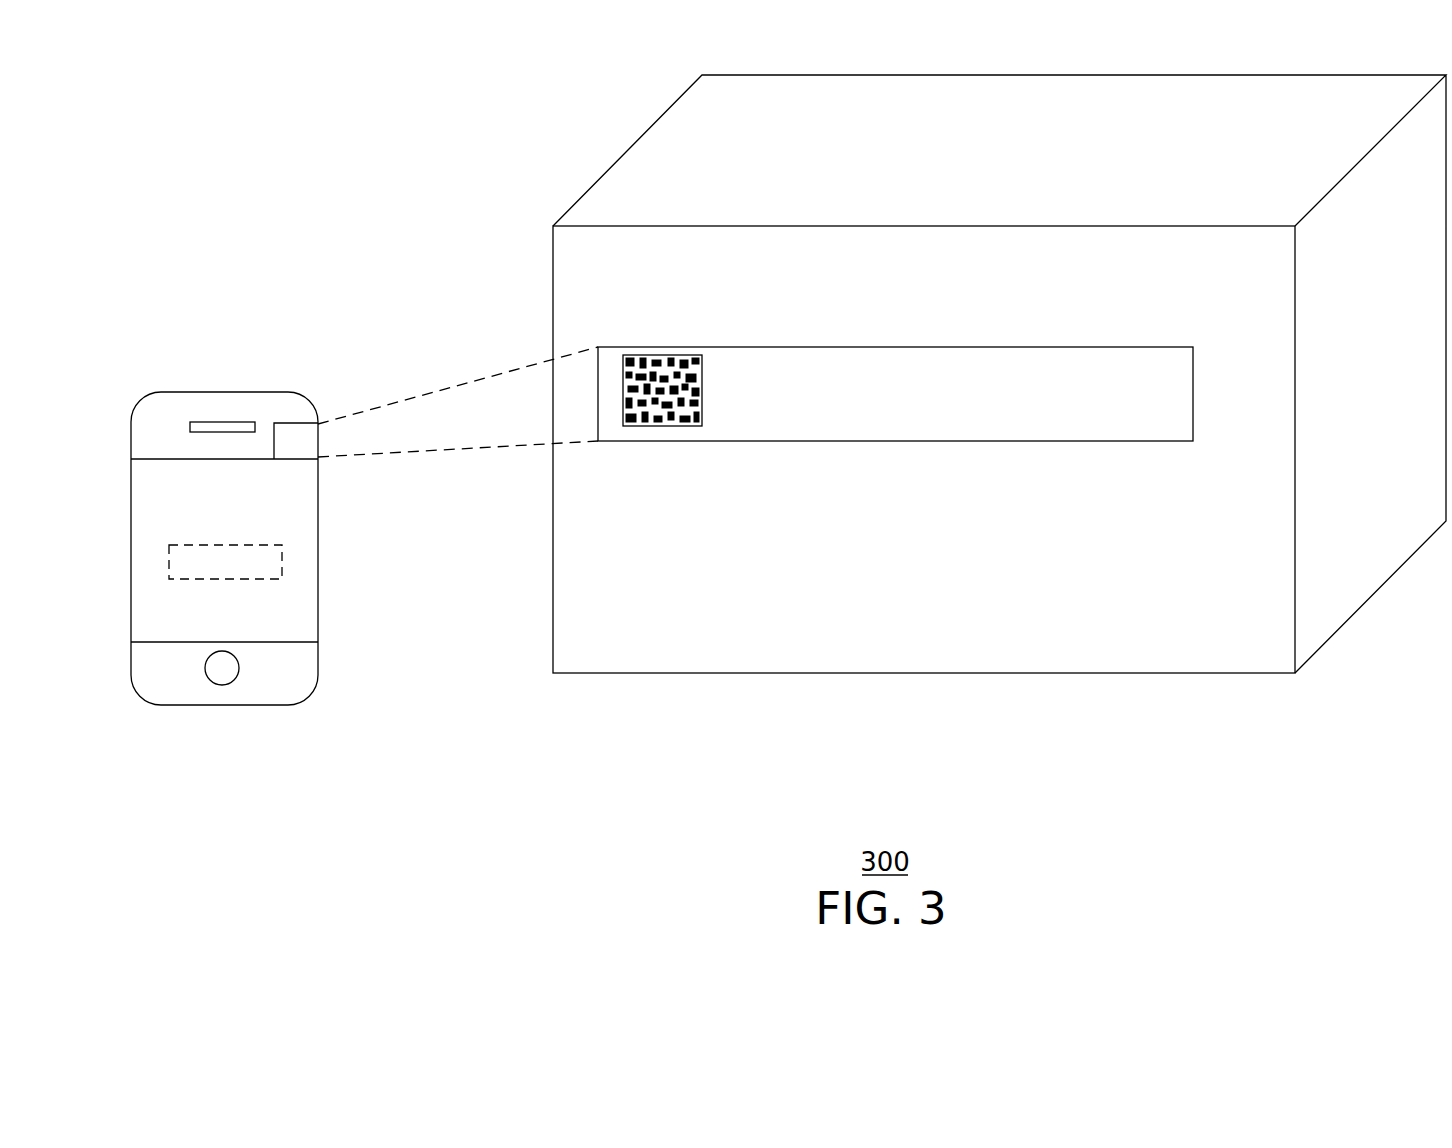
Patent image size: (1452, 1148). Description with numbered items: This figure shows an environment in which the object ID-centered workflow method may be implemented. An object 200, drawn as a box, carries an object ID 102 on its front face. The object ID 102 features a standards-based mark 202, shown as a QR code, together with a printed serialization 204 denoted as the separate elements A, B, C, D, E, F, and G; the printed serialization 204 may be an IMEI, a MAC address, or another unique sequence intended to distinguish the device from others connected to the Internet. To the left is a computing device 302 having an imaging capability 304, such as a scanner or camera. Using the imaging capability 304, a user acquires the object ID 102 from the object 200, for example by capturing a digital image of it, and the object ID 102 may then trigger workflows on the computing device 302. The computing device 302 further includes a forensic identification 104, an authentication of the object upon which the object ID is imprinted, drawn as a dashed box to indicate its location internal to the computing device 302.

The object ID 102 is at (1208, 348).
The forensic identification 104 is at (225, 562).
The object 200 is at (647, 675).
The standards-based mark 202 is at (662, 426).
The printed serialization 204 is at (1138, 327).
The computing device 302 is at (207, 392).
The imaging capability 304 is at (300, 423).